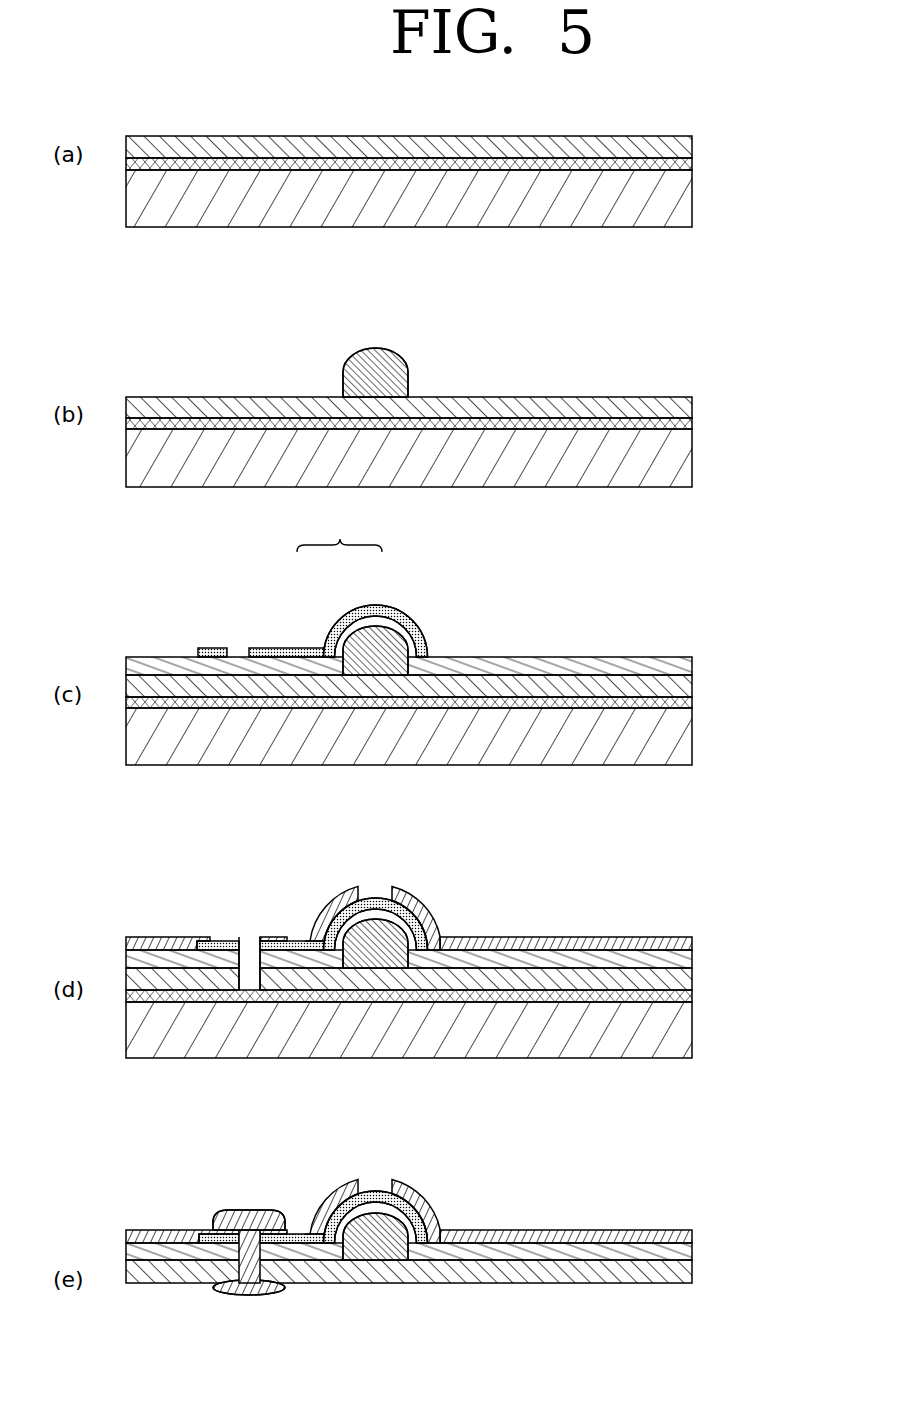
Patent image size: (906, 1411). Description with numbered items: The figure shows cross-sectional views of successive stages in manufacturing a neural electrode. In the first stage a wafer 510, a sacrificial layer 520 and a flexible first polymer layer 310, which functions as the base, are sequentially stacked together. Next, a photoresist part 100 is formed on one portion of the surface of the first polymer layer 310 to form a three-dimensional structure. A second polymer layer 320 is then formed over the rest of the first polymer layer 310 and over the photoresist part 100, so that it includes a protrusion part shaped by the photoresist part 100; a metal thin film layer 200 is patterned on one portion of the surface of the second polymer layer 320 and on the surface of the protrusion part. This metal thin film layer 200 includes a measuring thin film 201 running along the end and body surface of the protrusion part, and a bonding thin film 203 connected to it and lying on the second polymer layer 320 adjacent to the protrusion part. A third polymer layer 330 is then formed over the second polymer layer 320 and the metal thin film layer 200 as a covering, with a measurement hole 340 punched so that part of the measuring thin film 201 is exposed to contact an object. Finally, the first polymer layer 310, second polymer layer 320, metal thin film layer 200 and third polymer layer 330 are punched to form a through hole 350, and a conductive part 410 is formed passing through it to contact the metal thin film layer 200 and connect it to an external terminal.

The photoresist part 100 is at (405, 362).
The metal thin film layer 200 is at (339, 532).
The measuring thin film 201 is at (375, 606).
The bonding thin film 203 is at (293, 647).
The first polymer layer 310 is at (686, 147).
The second polymer layer 320 is at (686, 666).
The third polymer layer 330 is at (681, 940).
The measurement hole 340 is at (376, 892).
The through hole 350 is at (247, 945).
The conductive part 410 is at (247, 1215).
The wafer 510 is at (686, 203).
The sacrificial layer 520 is at (686, 164).